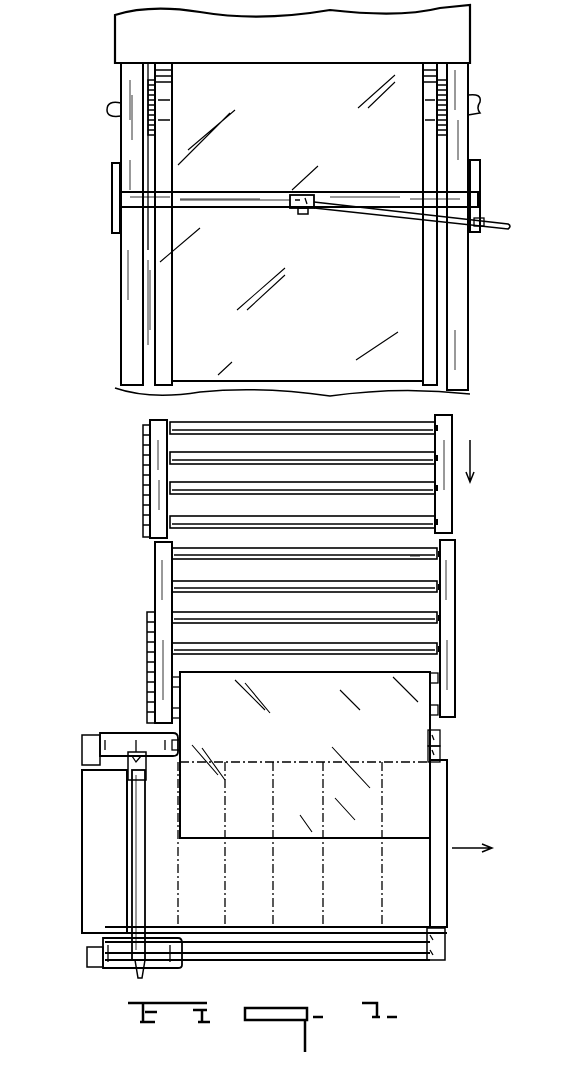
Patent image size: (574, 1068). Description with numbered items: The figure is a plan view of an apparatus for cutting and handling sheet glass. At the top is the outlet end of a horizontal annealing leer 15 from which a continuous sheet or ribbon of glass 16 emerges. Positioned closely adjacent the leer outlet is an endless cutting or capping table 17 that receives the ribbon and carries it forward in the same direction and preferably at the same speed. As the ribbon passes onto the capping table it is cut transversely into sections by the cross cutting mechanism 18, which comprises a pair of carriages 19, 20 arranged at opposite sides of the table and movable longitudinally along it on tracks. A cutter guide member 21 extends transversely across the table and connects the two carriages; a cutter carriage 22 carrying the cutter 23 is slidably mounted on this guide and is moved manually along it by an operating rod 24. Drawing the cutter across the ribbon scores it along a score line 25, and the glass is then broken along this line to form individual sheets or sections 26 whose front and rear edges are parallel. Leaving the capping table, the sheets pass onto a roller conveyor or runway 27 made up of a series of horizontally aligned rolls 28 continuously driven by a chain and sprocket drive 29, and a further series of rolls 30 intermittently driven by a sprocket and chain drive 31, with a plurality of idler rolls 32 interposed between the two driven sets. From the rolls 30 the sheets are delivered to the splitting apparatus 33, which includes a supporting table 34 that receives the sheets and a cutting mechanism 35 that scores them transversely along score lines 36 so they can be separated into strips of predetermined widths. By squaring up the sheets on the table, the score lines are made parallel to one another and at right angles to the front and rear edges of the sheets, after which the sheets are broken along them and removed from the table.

The outlet end of horizontal annealing leer 15 is at (465, 35).
The continuous sheet or ribbon of glass 16 is at (175, 85).
The endless cutting or capping table 17 is at (440, 303).
The cross cutting mechanism 18 is at (215, 192).
The carriage 19 is at (112, 214).
The carriage 20 is at (476, 182).
The cutter guide member 21 is at (278, 192).
The cutter carriage 22 is at (308, 196).
The cutter 23 is at (303, 214).
The operating rod 24 is at (380, 212).
The score line 25 is at (245, 207).
The individual sheets or sections 26 is at (190, 335).
The roller conveyor or runway 27 is at (462, 603).
The continuously driven rolls 28 is at (232, 453).
The chain and sprocket drive 29 is at (143, 480).
The intermittently driven rolls 30 is at (208, 648).
The sprocket and chain drive 31 is at (149, 662).
The idler rolls 32 is at (402, 585).
The splitting apparatus 33 is at (457, 794).
The supporting table 34 is at (100, 848).
The cutting mechanism 35 is at (146, 845).
The score lines 36 is at (283, 893).